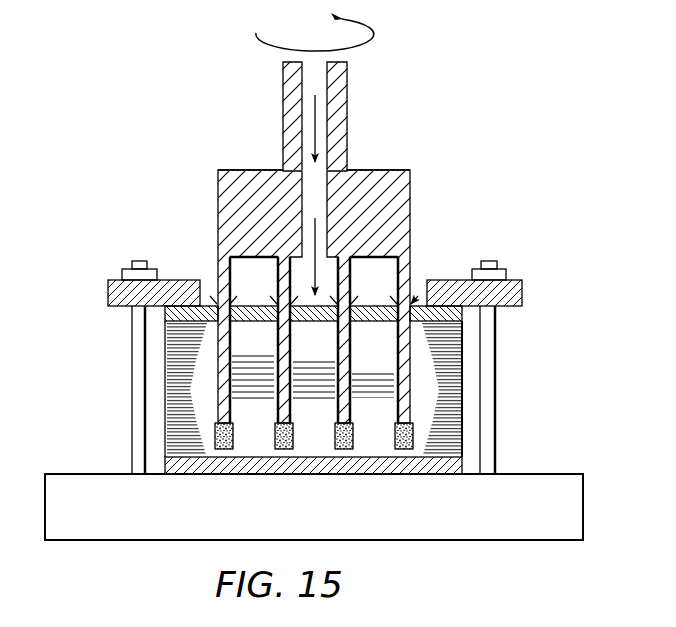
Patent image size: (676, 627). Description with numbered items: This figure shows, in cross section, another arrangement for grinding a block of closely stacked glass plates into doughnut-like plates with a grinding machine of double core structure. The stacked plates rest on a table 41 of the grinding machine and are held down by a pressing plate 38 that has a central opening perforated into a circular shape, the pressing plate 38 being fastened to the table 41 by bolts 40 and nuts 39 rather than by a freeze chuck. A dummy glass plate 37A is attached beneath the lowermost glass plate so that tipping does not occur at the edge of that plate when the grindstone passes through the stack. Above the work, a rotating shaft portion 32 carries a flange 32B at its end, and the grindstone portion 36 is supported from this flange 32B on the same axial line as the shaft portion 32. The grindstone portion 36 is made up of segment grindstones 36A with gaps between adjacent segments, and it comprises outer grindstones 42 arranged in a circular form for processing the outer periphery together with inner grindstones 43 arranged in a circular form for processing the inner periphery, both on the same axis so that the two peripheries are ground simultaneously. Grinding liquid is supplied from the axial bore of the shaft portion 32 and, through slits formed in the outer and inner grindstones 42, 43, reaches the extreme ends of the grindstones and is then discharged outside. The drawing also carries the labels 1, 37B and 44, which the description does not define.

The fastening bolt 1 is at (470, 389).
The shaft portion 32 is at (350, 75).
The flange 32B is at (410, 186).
The grindstone portion 36 is at (214, 258).
The segment grindstones 36A is at (419, 448).
The dummy glass plate 37A is at (182, 468).
The top flange plate 37B is at (165, 316).
The pressing plate 38 is at (522, 298).
The nuts 39 is at (500, 270).
The bolts 40 is at (496, 424).
The table 41 is at (581, 476).
The outer grindstones 42 is at (232, 400).
The inner grindstones 43 is at (339, 338).
The fluid flow arrow 44 is at (318, 128).